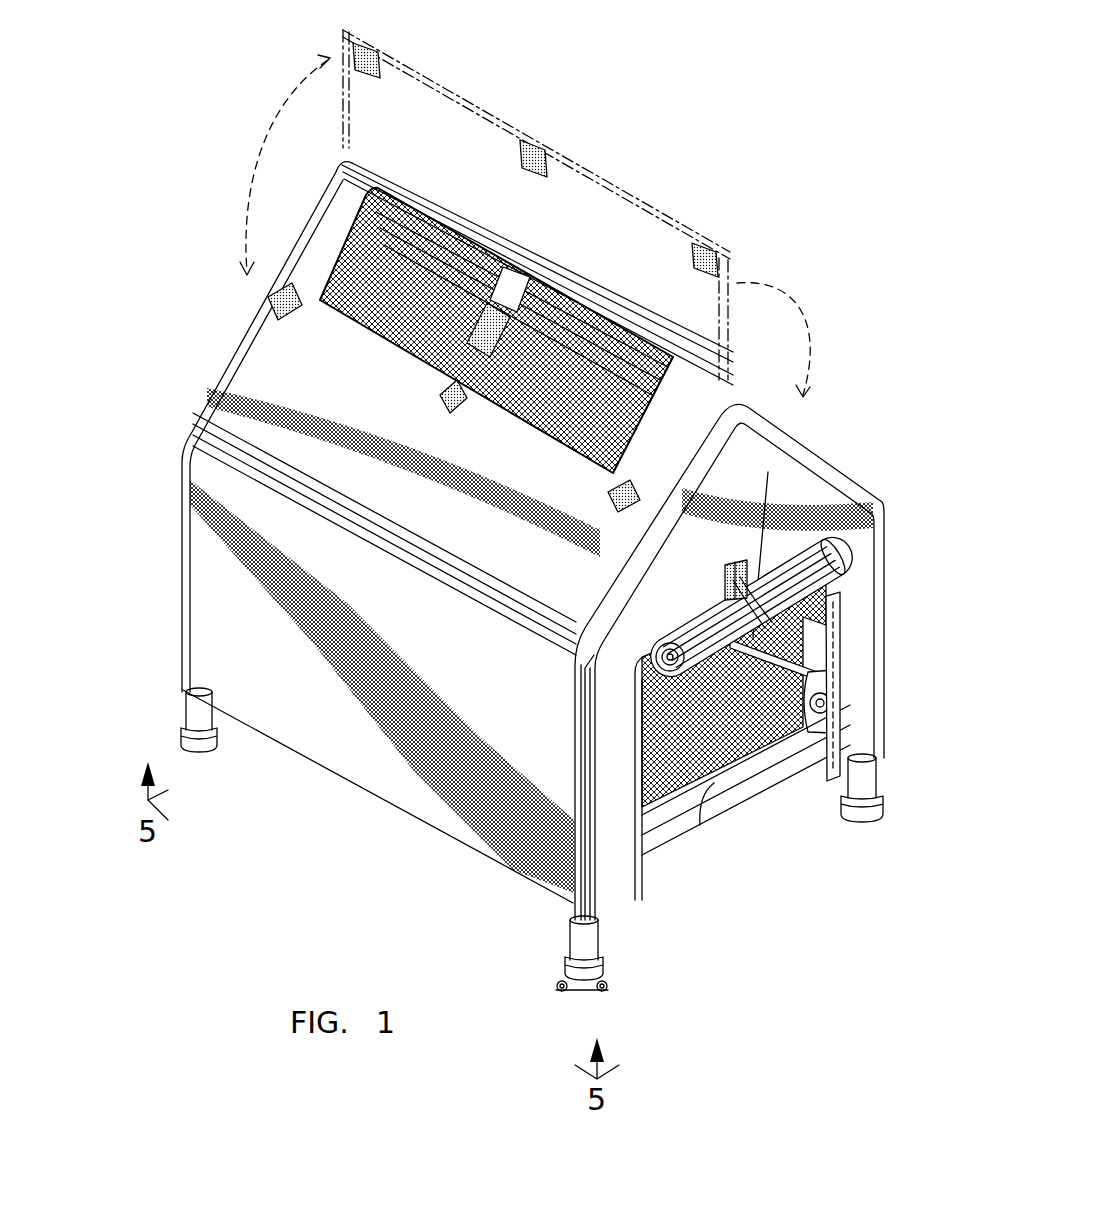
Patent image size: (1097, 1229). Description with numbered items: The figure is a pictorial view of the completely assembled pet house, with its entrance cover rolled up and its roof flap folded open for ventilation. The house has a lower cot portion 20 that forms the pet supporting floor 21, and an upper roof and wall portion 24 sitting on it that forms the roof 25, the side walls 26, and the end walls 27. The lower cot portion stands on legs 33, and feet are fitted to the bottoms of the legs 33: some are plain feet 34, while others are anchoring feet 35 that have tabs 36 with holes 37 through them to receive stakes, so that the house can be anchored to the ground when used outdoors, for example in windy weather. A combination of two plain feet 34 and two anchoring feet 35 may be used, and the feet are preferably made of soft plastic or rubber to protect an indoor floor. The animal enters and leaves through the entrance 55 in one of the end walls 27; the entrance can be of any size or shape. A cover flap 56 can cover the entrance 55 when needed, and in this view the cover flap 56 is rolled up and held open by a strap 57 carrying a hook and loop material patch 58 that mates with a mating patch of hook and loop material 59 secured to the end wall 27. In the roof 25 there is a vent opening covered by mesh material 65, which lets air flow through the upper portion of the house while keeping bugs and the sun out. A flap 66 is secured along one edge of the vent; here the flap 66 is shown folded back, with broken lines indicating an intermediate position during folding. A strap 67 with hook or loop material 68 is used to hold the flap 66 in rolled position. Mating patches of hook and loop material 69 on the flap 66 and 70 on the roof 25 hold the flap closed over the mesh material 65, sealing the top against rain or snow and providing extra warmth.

The lower cot portion 20 is at (530, 936).
The pet supporting floor 21 is at (697, 825).
The upper roof and wall portion 24 is at (136, 429).
The roof 25 is at (288, 338).
The side walls 26 is at (215, 600).
The end walls 27 is at (817, 487).
The legs 33 is at (600, 942).
The plain feet 34 is at (858, 822).
The anchoring feet 35 is at (585, 990).
The tabs 36 is at (610, 988).
The holes 37 is at (612, 984).
The entrance 55 is at (837, 645).
The cover flap 56 is at (830, 570).
The strap 57 is at (776, 539).
The hook and loop material patch 58 is at (735, 575).
The mating patch of hook and loop material 59 is at (728, 590).
The mesh material 65 is at (367, 263).
The flap 66 is at (757, 395).
The strap 67 is at (520, 296).
The hook or loop material 68 is at (522, 305).
The hook and loop material patches on flap 69 is at (372, 58).
The hook and loop material patches on roof 70 is at (378, 365).